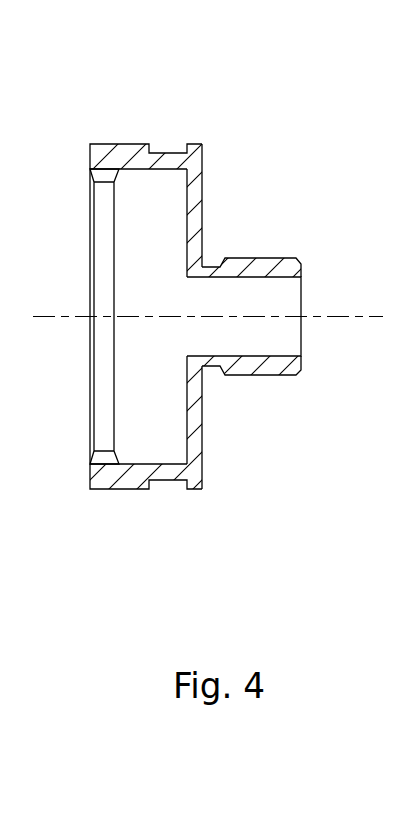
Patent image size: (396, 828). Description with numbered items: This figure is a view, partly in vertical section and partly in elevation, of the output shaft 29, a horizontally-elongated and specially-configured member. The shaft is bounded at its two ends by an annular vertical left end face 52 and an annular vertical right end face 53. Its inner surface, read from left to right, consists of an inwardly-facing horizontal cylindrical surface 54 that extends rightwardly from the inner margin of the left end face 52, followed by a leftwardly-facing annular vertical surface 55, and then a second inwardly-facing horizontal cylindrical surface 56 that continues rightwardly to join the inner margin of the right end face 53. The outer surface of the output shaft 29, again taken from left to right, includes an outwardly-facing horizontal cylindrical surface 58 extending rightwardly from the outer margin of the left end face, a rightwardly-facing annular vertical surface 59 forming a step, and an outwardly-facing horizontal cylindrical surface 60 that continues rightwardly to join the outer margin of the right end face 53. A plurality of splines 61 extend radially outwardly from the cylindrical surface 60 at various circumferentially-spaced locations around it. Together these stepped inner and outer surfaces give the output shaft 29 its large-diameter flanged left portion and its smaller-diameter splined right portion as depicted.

The output shaft 29 is at (198, 102).
The left end face 52 is at (88, 481).
The right end face 53 is at (307, 368).
The inwardly-facing horizontal cylindrical surface 54 is at (140, 460).
The leftwardly-facing annular vertical surface 55 is at (183, 213).
The inwardly-facing horizontal cylindrical surface 56 is at (212, 352).
The outwardly-facing horizontal cylindrical surface 58 is at (116, 143).
The rightwardly-facing annular vertical surface 59 is at (207, 198).
The outwardly-facing horizontal cylindrical surface 60 is at (275, 265).
The splines 61 is at (265, 374).